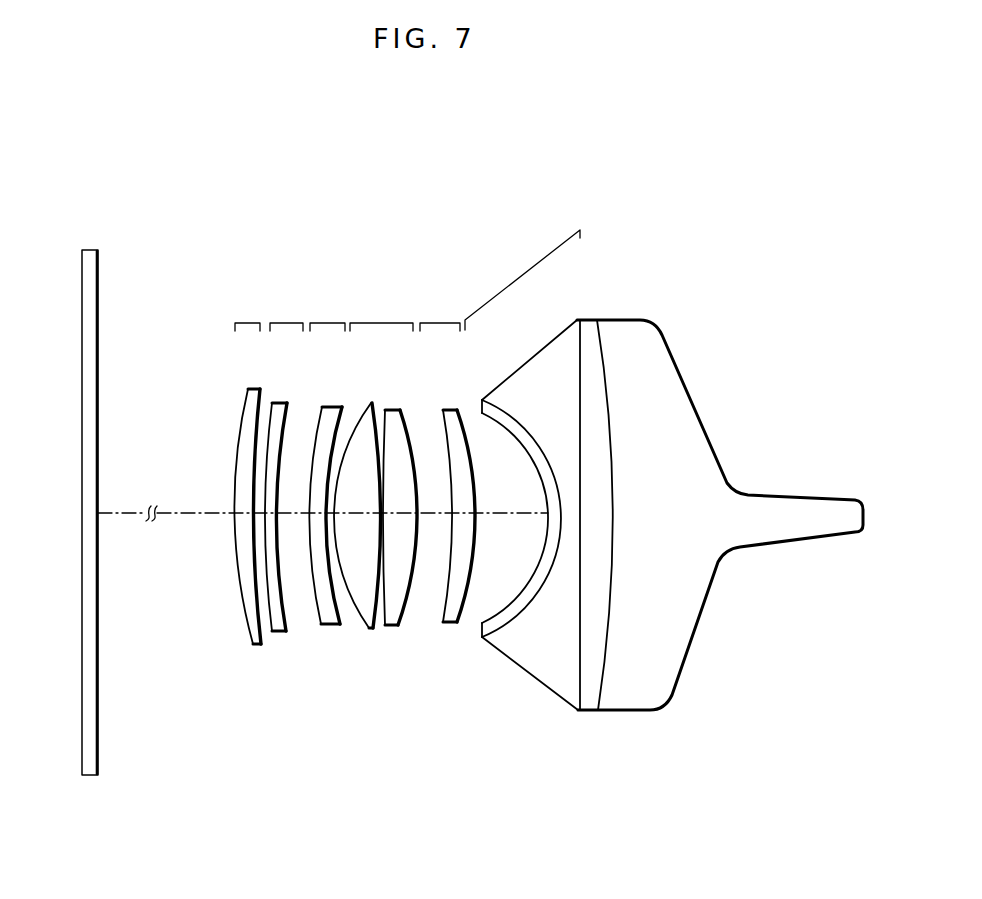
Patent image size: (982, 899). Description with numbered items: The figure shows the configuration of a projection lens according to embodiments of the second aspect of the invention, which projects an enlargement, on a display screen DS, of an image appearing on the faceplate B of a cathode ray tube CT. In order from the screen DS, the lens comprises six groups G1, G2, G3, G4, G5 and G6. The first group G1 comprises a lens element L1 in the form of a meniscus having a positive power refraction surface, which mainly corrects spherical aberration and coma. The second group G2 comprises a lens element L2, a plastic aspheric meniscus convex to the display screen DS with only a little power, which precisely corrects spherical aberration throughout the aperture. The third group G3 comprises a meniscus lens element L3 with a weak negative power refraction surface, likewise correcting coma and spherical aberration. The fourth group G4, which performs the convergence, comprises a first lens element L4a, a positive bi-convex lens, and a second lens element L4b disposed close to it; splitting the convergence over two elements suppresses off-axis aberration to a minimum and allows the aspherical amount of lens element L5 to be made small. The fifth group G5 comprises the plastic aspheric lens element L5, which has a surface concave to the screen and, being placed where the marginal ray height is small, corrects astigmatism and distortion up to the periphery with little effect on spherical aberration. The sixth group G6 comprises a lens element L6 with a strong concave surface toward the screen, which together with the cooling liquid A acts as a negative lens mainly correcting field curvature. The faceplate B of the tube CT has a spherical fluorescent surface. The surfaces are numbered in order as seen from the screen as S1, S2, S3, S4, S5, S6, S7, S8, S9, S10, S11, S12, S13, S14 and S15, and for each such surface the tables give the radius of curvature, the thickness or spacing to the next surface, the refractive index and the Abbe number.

The display screen DS is at (92, 250).
The first group G1 is at (210, 503).
The second group G2 is at (276, 498).
The third group G3 is at (332, 498).
The fourth group G4 is at (400, 529).
The fifth group G5 is at (456, 498).
The sixth group G6 is at (522, 484).
The lens element L1 is at (209, 529).
The lens element L2 is at (276, 521).
The lens element L3 is at (332, 525).
The first lens element L4a is at (375, 535).
The second lens element L4b is at (425, 570).
The lens element L5 is at (459, 521).
The lens element L6 is at (518, 569).
The first surface S1 is at (235, 427).
The second surface S2 is at (258, 388).
The third surface S3 is at (271, 402).
The fourth surface S4 is at (288, 404).
The fifth surface S5 is at (322, 407).
The sixth surface S6 is at (345, 424).
The seventh surface S7 is at (370, 402).
The eighth surface S8 is at (385, 409).
The ninth surface S9 is at (403, 432).
The tenth surface S10 is at (443, 409).
The eleventh surface S11 is at (458, 413).
The twelfth surface S12 is at (532, 474).
The thirteenth surface S13 is at (543, 503).
The fourteenth surface S14 is at (509, 410).
The fifteenth surface S15 is at (578, 368).
The cooling liquid A is at (557, 677).
The faceplate B is at (639, 521).
The cathode ray tube CT is at (686, 521).